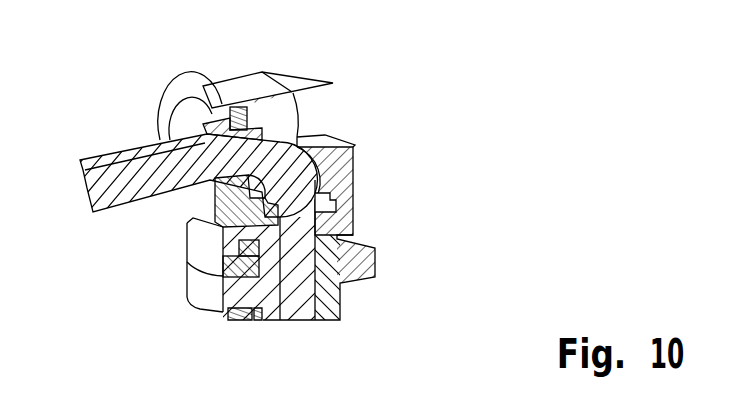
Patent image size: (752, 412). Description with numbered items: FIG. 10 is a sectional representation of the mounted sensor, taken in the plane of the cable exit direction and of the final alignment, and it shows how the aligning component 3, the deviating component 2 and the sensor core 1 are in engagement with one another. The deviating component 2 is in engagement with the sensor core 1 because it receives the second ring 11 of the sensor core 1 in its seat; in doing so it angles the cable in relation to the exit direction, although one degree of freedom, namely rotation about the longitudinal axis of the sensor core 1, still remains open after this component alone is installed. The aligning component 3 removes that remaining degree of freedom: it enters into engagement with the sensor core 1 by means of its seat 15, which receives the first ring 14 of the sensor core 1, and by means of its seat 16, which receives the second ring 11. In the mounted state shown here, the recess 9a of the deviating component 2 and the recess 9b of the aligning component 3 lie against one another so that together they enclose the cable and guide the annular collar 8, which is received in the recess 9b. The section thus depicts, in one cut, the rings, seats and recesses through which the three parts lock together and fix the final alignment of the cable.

The sensor core 1 is at (358, 300).
The deviating component 2 is at (357, 89).
The aligning component 3 is at (183, 223).
The annular collar 8 is at (203, 136).
The recess 9a is at (185, 222).
The recess 9b is at (203, 137).
The second ring 11 is at (336, 203).
The first ring 14 is at (243, 258).
The seat 15 is at (222, 268).
The seat 16 is at (345, 151).